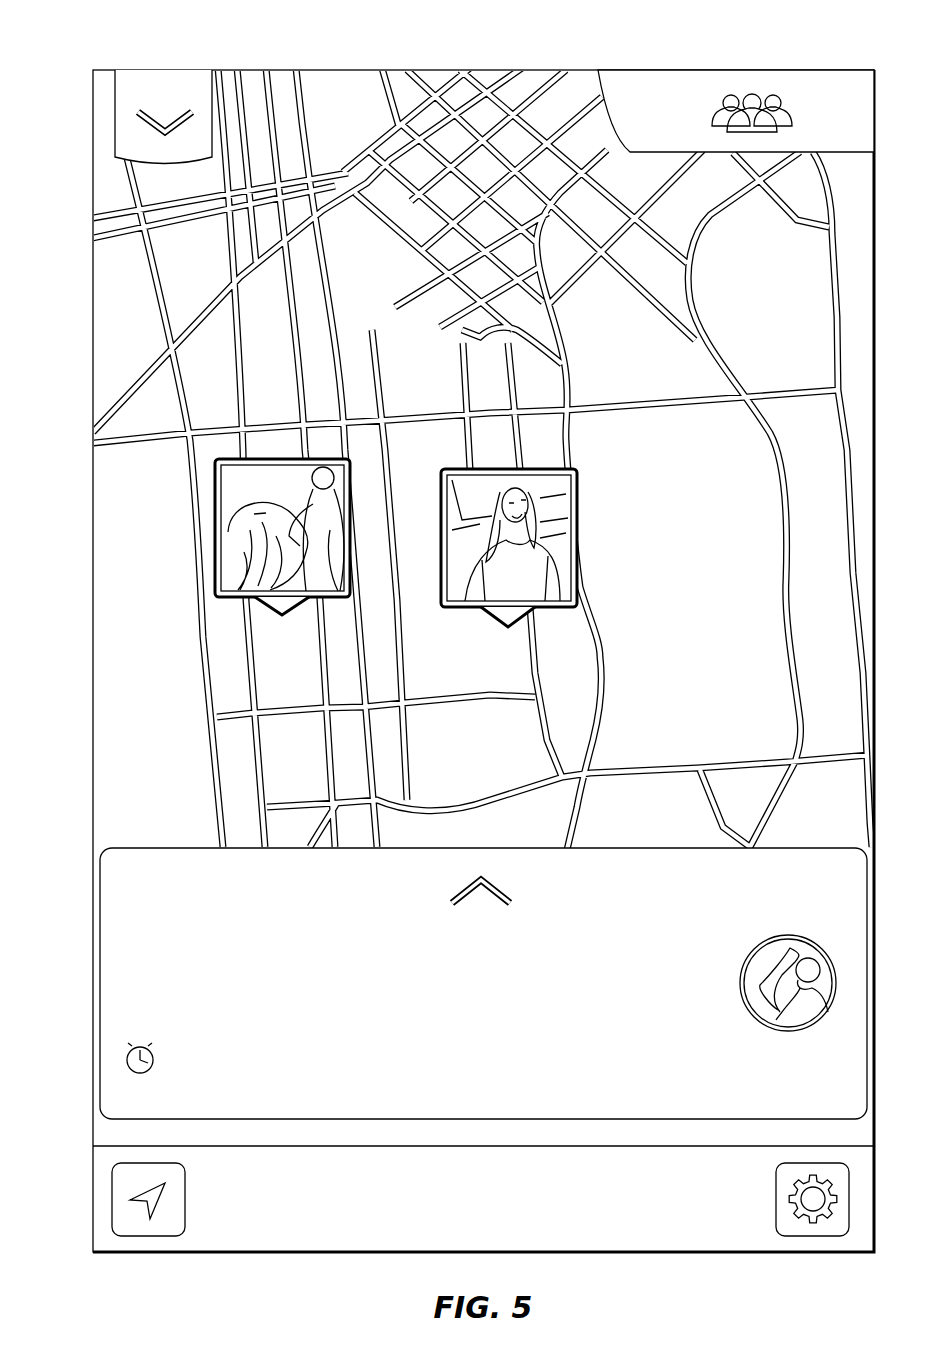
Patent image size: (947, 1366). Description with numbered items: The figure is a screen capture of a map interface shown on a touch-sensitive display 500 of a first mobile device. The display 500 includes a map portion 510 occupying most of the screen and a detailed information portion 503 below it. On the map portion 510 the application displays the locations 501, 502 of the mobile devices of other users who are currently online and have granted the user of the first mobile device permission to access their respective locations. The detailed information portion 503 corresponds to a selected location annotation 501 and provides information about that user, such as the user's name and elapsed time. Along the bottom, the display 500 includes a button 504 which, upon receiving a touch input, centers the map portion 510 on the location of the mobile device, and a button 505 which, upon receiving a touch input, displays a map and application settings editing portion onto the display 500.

The display 500 is at (443, 654).
The map portion 510 is at (408, 178).
The location annotation 501 is at (568, 540).
The location 502 is at (222, 511).
The detailed information portion 503 is at (123, 940).
The button 504 is at (148, 1236).
The button 505 is at (803, 1236).